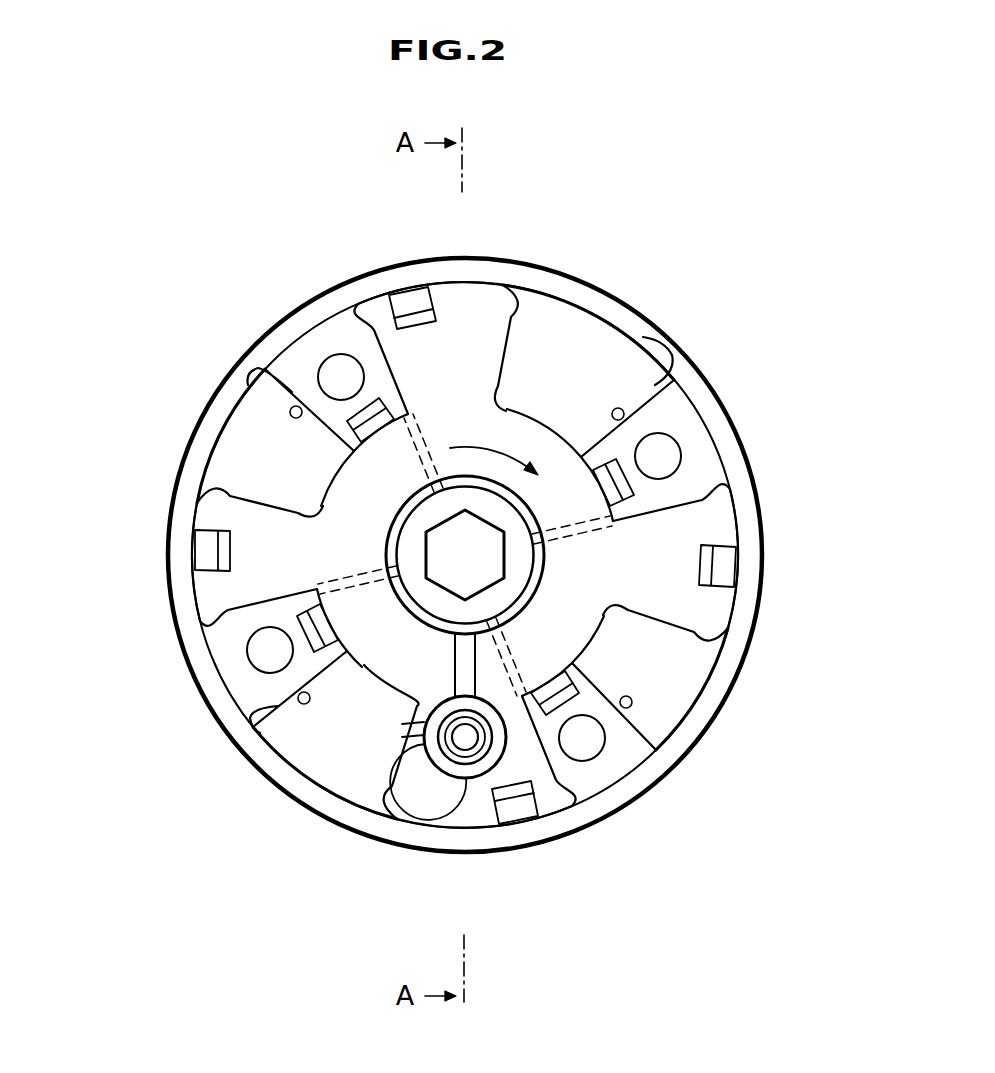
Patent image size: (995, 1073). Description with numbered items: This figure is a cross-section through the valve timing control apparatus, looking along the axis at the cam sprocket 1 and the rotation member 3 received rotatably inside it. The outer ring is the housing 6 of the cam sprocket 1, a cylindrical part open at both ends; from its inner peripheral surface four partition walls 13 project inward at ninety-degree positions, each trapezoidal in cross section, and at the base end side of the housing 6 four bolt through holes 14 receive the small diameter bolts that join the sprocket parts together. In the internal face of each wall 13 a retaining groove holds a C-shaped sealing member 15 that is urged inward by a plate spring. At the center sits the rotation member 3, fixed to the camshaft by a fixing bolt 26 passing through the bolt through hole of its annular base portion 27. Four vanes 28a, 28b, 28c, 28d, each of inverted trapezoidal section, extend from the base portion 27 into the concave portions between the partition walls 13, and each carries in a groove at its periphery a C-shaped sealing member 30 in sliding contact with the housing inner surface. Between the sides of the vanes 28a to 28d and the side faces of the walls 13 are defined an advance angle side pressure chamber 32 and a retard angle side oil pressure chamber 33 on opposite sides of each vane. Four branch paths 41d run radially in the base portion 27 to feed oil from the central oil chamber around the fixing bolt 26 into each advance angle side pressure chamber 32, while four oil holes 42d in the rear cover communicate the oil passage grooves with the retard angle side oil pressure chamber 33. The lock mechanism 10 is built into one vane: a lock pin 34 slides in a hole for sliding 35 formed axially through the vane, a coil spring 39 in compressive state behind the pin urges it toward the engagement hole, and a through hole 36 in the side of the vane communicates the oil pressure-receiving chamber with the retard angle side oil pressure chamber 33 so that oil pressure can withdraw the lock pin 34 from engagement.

The cam sprocket 1 is at (584, 276).
The rotation member 3 is at (463, 559).
The housing 6 is at (607, 290).
The lock mechanism 10 is at (472, 779).
The partition walls 13 is at (460, 529).
The bolt through holes 14 is at (660, 457).
The sealing member 15 is at (672, 430).
The fixing bolt 26 is at (513, 520).
The base portion 27 is at (270, 774).
The vane 28a is at (398, 815).
The vane 28b is at (478, 318).
The vane 28c is at (730, 600).
The vane 28d is at (200, 578).
The sealing member 30 is at (405, 298).
The advance angle side pressure chamber 32 is at (371, 292).
The retard angle side oil pressure chamber 33 is at (540, 385).
The lock pin 34 is at (461, 792).
The hole for sliding 35 is at (446, 775).
The through hole 36 is at (406, 764).
The coil spring 39 is at (484, 764).
The branch paths 41d is at (412, 448).
The oil holes 42d is at (623, 410).